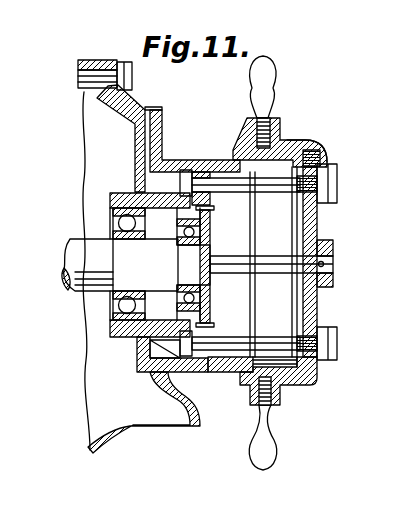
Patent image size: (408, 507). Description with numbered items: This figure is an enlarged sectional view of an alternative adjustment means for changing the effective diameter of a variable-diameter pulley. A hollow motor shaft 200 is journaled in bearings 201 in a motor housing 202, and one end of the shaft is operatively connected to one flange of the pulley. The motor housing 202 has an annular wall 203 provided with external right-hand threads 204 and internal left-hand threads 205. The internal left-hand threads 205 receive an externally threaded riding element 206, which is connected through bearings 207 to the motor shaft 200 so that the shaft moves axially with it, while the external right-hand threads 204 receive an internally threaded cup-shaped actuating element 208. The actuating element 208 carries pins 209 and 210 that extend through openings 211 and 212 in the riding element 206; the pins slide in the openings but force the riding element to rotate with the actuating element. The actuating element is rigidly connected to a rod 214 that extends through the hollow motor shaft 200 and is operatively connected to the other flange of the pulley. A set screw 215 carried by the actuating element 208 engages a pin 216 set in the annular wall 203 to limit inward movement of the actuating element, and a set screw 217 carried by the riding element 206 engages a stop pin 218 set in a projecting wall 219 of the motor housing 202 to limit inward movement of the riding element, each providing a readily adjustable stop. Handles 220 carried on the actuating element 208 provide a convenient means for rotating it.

The hollow motor shaft 200 is at (76, 286).
The bearings 201 is at (112, 214).
The motor housing 202 is at (100, 95).
The annular wall 203 is at (172, 160).
The external right-hand threads 204 is at (250, 386).
The internal left-hand threads 205 is at (234, 368).
The riding element 206 is at (139, 367).
The bearings 207 is at (180, 218).
The actuating element 208 is at (286, 144).
The pin 209 is at (323, 173).
The pin 210 is at (318, 330).
The opening 211 is at (200, 172).
The opening 212 is at (167, 382).
The rod 214 is at (320, 247).
The set screw 215 is at (303, 158).
The pin 216 is at (243, 142).
The set screw 217 is at (270, 268).
The stop pin 218 is at (149, 252).
The projecting wall 219 is at (146, 198).
The handles 220 is at (272, 81).